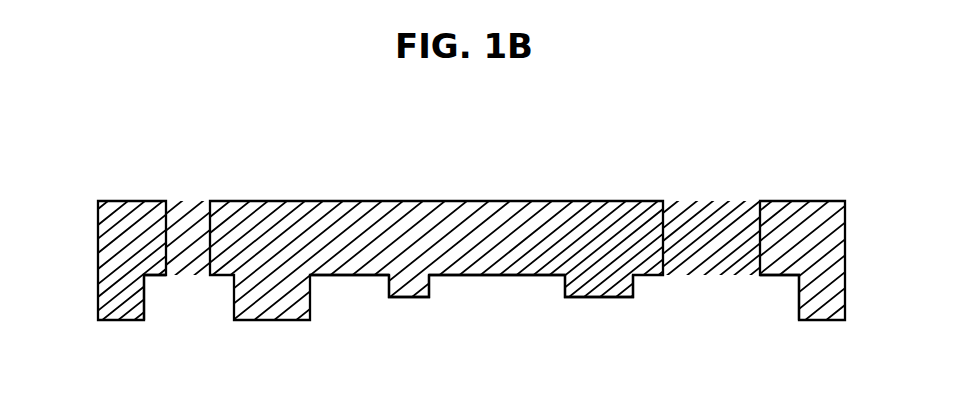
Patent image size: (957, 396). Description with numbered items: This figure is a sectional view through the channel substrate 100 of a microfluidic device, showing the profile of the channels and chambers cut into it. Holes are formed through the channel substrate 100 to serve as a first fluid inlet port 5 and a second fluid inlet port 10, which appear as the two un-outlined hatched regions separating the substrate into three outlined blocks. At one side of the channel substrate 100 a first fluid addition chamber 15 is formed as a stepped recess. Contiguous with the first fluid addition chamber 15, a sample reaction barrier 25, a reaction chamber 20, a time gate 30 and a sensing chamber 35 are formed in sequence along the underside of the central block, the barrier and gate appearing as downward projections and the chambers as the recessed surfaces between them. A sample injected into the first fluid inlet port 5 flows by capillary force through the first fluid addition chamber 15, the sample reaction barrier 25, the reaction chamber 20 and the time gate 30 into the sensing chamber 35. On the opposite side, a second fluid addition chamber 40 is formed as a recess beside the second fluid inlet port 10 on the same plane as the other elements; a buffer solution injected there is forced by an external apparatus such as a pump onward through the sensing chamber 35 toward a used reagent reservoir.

The channel substrate 100 is at (110, 240).
The second fluid inlet port 10 is at (188, 212).
The first fluid inlet port 5 is at (710, 212).
The second fluid addition chamber 40 is at (161, 292).
The sensing chamber 35 is at (349, 277).
The time gate 30 is at (408, 299).
The reaction chamber 20 is at (496, 277).
The sample reaction barrier 25 is at (599, 299).
The first fluid addition chamber 15 is at (782, 293).